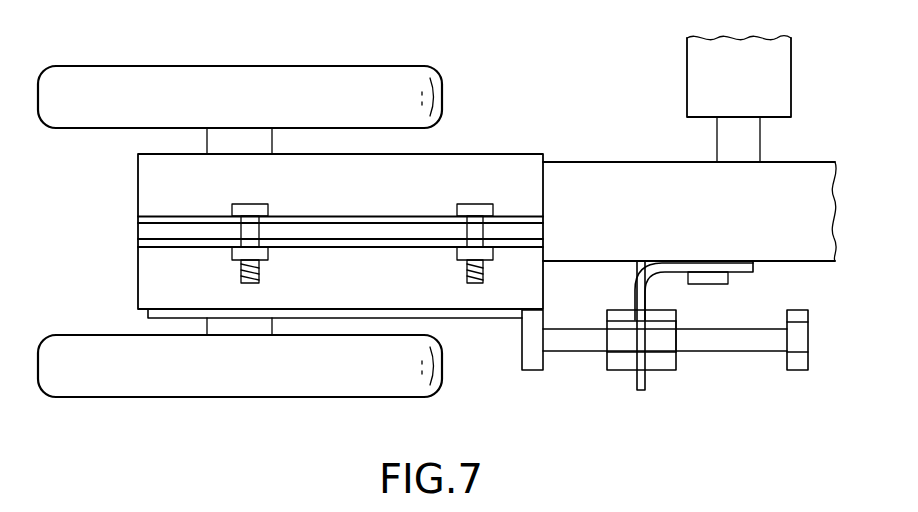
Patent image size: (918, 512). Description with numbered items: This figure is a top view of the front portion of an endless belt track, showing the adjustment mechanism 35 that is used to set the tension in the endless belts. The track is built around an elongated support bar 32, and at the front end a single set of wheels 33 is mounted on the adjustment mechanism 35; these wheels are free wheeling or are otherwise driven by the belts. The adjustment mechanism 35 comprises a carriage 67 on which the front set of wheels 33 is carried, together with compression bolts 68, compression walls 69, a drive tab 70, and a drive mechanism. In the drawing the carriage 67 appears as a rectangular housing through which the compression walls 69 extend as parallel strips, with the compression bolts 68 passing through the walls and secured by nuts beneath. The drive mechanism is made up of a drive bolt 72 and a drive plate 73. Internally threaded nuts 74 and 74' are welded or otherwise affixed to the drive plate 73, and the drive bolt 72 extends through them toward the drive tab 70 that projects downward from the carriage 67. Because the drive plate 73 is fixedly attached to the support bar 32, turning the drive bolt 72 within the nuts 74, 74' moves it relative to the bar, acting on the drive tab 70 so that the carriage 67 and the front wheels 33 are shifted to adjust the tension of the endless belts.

The support bar 32 is at (792, 178).
The single set of wheels 33 is at (103, 128).
The adjustment mechanism 35 is at (485, 346).
The carriage 67 is at (493, 170).
The compression bolts 68 is at (270, 212).
The compression walls 69 is at (352, 215).
The drive tab 70 is at (543, 320).
The drive bolt 72 is at (745, 324).
The drive plate 73 is at (640, 378).
The internally threaded nut 74 is at (603, 364).
The internally threaded nut 74' is at (687, 373).